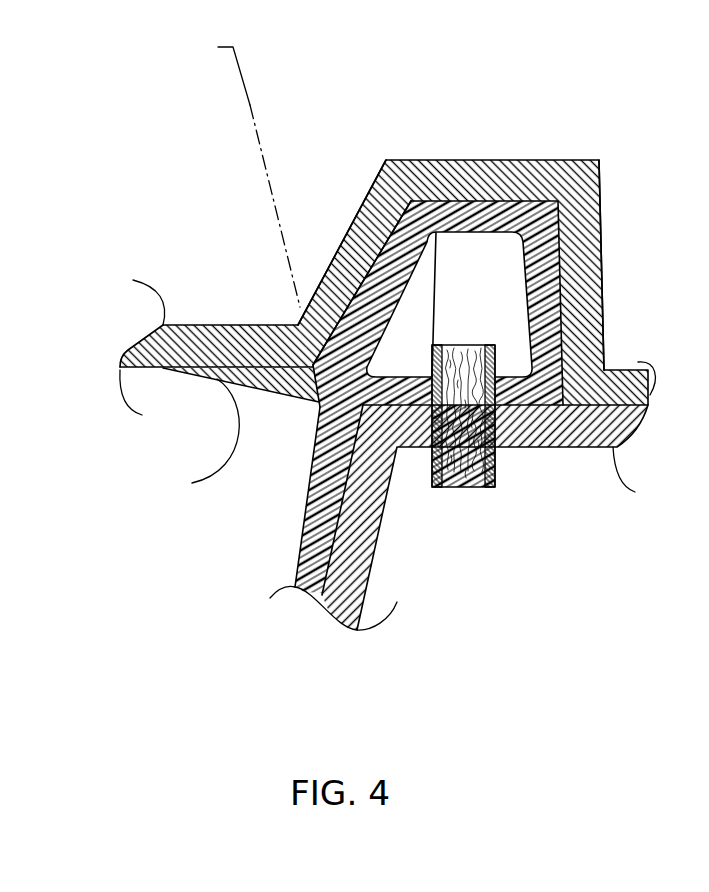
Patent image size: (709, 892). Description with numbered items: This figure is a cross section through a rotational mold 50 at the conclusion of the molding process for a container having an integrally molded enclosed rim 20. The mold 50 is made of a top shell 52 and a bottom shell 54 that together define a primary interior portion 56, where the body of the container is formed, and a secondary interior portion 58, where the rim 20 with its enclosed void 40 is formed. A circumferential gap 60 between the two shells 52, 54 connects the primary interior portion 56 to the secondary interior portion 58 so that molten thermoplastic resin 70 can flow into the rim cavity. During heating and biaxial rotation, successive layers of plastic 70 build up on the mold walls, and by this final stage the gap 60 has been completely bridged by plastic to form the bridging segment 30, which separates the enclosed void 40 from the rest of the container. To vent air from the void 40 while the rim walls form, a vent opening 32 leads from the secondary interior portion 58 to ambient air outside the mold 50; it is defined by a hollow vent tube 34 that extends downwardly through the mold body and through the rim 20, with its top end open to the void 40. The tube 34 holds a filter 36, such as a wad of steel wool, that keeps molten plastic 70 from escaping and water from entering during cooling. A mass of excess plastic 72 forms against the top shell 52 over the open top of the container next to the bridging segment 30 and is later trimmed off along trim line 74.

The enclosed rim 20 is at (527, 188).
The bridging segment 30 is at (307, 323).
The vent opening 32 is at (473, 337).
The vent tube 34 is at (497, 460).
The filter 36 is at (450, 468).
The enclosed void 40 is at (505, 245).
The mold 50 is at (625, 253).
The top shell 52 is at (620, 362).
The bottom shell 54 is at (590, 447).
The primary interior portion 56 is at (255, 458).
The secondary interior portion 58 is at (460, 253).
The gap 60 is at (318, 410).
The molten thermoplastic resin 70 is at (400, 273).
The excess plastic 72 is at (192, 483).
The trim line 74 is at (242, 168).